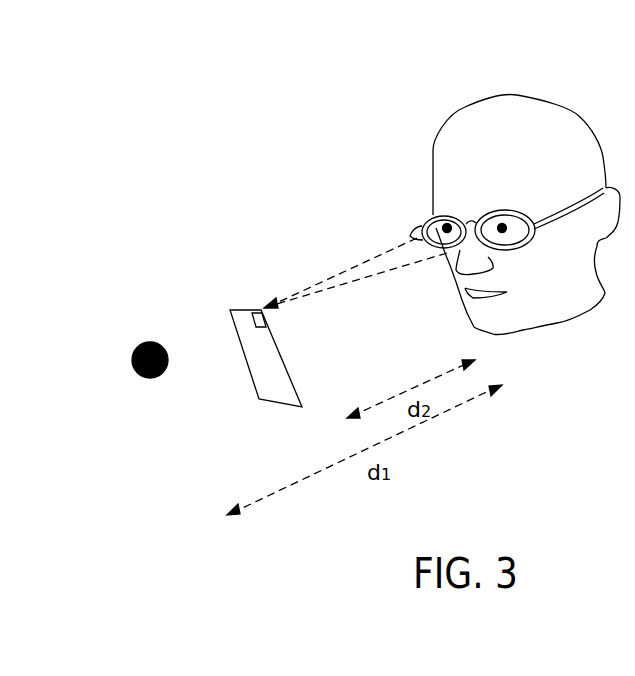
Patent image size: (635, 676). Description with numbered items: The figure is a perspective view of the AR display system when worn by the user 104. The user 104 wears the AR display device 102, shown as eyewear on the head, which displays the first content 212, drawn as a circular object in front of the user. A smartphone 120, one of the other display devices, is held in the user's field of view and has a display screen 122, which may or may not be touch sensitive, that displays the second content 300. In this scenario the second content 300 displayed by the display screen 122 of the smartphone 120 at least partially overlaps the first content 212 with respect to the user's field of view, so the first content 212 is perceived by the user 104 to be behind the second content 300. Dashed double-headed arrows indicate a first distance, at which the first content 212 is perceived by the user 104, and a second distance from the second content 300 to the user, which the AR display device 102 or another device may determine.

The user 104 is at (472, 116).
The AR display device 102 is at (417, 223).
The smartphone 120 is at (230, 310).
The second content 300 is at (253, 310).
The display screen 122 is at (287, 370).
The first content 212 is at (137, 343).